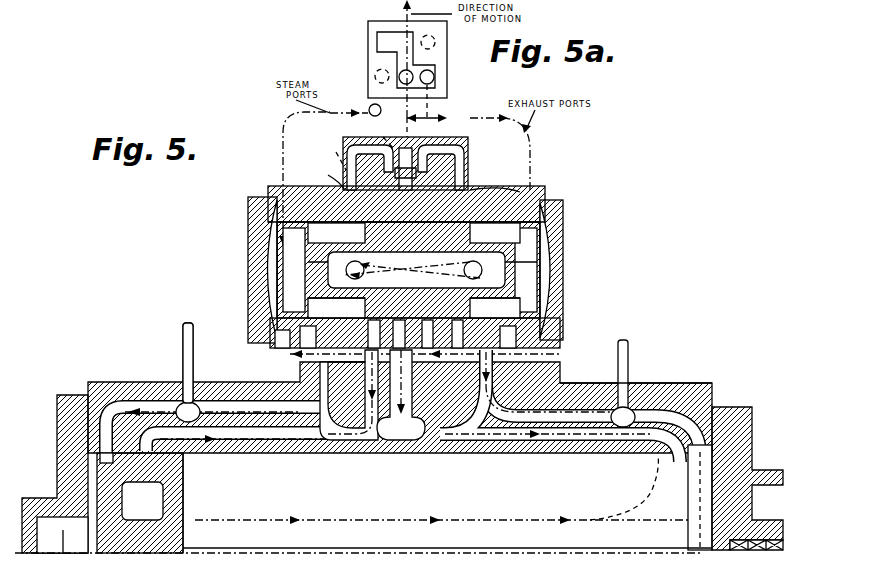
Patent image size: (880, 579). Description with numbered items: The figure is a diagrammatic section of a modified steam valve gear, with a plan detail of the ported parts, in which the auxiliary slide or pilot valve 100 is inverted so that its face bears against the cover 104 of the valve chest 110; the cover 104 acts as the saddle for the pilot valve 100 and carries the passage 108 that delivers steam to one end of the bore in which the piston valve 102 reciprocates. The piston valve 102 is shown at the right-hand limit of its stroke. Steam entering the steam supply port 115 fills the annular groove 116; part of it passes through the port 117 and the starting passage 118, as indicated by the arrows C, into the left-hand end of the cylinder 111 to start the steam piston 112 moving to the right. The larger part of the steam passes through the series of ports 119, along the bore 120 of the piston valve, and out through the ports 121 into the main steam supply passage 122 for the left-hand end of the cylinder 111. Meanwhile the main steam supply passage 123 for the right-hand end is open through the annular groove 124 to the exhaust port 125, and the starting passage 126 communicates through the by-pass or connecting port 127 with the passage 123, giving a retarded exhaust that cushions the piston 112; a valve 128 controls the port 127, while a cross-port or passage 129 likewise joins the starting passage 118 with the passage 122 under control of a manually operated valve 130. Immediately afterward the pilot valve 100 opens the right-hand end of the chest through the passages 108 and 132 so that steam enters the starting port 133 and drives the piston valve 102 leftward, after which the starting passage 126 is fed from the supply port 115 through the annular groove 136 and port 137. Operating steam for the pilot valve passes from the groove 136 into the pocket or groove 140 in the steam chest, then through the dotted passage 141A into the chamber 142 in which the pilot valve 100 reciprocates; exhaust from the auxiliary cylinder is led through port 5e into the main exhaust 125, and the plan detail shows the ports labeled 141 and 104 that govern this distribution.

In FIG. 5, the auxiliary slide or pilot valve 100 is at (436, 162).
In FIG. 5, the piston valve 102 is at (563, 240).
In FIG. 5A, the cover 104 is at (448, 67).
In FIG. 5, the cover 104 is at (412, 148).
In FIG. 5, the passage 108 is at (468, 150).
In FIG. 5, the valve chest 110 is at (545, 195).
In FIG. 5, the cylinder 111 is at (405, 442).
In FIG. 5, the steam piston 112 is at (183, 497).
In FIG. 5, the steam supply port 115 is at (563, 305).
In FIG. 5, the annular groove 116 is at (563, 222).
In FIG. 5, the port 117 is at (563, 320).
In FIG. 5, the starting passage 118 is at (270, 383).
In FIG. 5, the ports 119 is at (563, 262).
In FIG. 5, the bore 120 is at (415, 255).
In FIG. 5, the ports 121 is at (337, 262).
In FIG. 5, the main steam supply passage 122 is at (280, 440).
In FIG. 5, the main steam supply passage 123 is at (490, 394).
In FIG. 5, the annular groove 124 is at (563, 283).
In FIG. 5, the exhaust port 125 is at (440, 442).
In FIG. 5, the starting passage 126 is at (716, 418).
In FIG. 5, the by-pass or connecting port 127 is at (617, 487).
In FIG. 5, the valve 128 is at (636, 402).
In FIG. 5, the cross-port or passage 129 is at (196, 395).
In FIG. 5, the manually operated valve 130 is at (178, 403).
In FIG. 5, the passage 132 is at (520, 190).
In FIG. 5, the starting port 133 is at (565, 205).
In FIG. 5, the annular groove 136 is at (265, 220).
In FIG. 5, the port 137 is at (292, 345).
In FIG. 5, the pocket or groove 140 is at (321, 174).
In FIG. 5A, the steam port 141 is at (376, 70).
In FIG. 5, the steam port 141 is at (394, 133).
In FIG. 5, the passage 141A is at (322, 145).
In FIG. 5, the chamber 142 is at (445, 170).
In FIG. 5, the valve face 5e is at (440, 180).
In FIG. 5, the arrows C is at (505, 356).